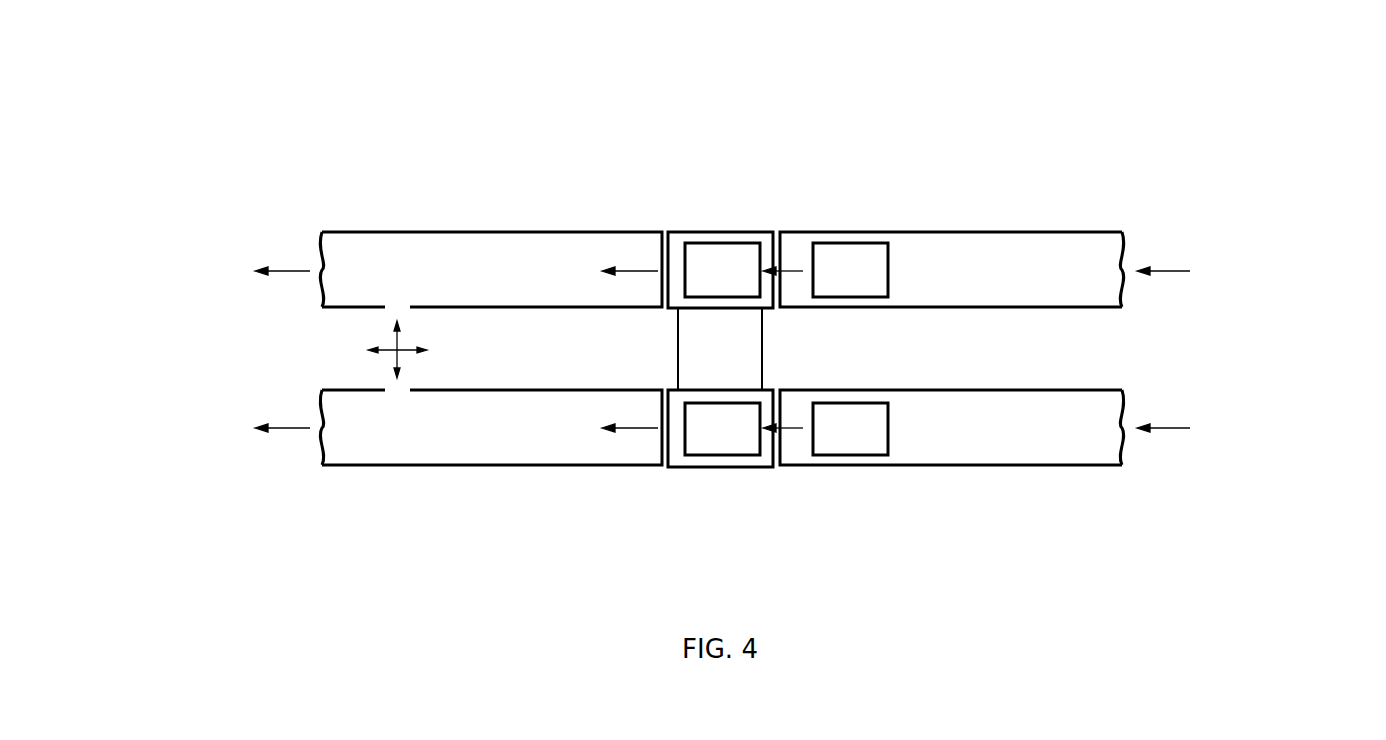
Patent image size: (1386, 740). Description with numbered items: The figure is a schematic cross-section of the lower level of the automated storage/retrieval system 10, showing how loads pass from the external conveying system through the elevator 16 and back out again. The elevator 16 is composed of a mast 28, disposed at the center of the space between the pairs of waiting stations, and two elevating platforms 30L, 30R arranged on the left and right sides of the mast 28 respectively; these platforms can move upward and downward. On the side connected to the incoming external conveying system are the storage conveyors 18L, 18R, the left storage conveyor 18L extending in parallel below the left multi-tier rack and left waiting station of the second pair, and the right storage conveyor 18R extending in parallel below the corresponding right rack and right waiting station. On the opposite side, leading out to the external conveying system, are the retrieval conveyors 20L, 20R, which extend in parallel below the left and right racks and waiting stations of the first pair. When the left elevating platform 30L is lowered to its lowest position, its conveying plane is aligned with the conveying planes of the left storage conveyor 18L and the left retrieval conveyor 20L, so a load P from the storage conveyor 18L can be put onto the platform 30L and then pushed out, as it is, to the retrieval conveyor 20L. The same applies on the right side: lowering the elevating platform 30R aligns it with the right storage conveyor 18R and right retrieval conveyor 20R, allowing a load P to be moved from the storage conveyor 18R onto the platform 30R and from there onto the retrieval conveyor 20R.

The automated storage/retrieval system 10 is at (1008, 92).
The elevator 16 is at (762, 214).
The storage conveyor 18R is at (1000, 232).
The storage conveyor 18L is at (1000, 465).
The retrieval conveyor 20R is at (461, 232).
The retrieval conveyor 20L is at (461, 465).
The mast 28 is at (742, 347).
The elevating platform 30R is at (686, 232).
The elevating platform 30L is at (685, 467).
The load P is at (786, 348).